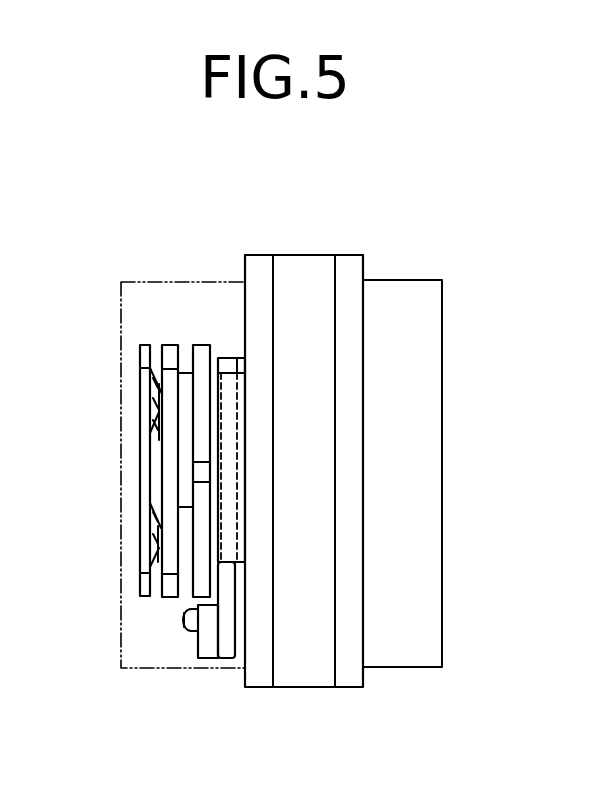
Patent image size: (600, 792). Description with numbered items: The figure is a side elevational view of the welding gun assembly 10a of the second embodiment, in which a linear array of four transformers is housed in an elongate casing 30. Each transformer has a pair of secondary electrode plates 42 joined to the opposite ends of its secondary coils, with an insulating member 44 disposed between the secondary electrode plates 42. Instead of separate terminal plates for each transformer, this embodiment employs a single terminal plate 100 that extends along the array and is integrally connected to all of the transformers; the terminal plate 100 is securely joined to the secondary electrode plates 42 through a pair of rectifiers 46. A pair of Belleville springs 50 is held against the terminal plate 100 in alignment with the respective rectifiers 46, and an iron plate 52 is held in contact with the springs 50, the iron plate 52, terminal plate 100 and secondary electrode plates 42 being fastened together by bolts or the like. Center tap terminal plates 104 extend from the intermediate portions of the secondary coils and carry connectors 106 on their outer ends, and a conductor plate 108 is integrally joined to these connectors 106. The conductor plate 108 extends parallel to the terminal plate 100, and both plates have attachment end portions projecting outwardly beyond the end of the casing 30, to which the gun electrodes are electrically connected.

The welding gun assembly 10a is at (302, 228).
The elongate casing 30 is at (318, 265).
The secondary electrode plates 42 is at (198, 528).
The insulating member 44 is at (205, 473).
The rectifiers 46 is at (190, 372).
The Belleville springs 50 is at (155, 388).
The iron plate 52 is at (152, 412).
The terminal plate 100 is at (167, 455).
The center tap terminal plates 104 is at (228, 578).
The connectors 106 is at (222, 660).
The conductor plate 108 is at (204, 645).